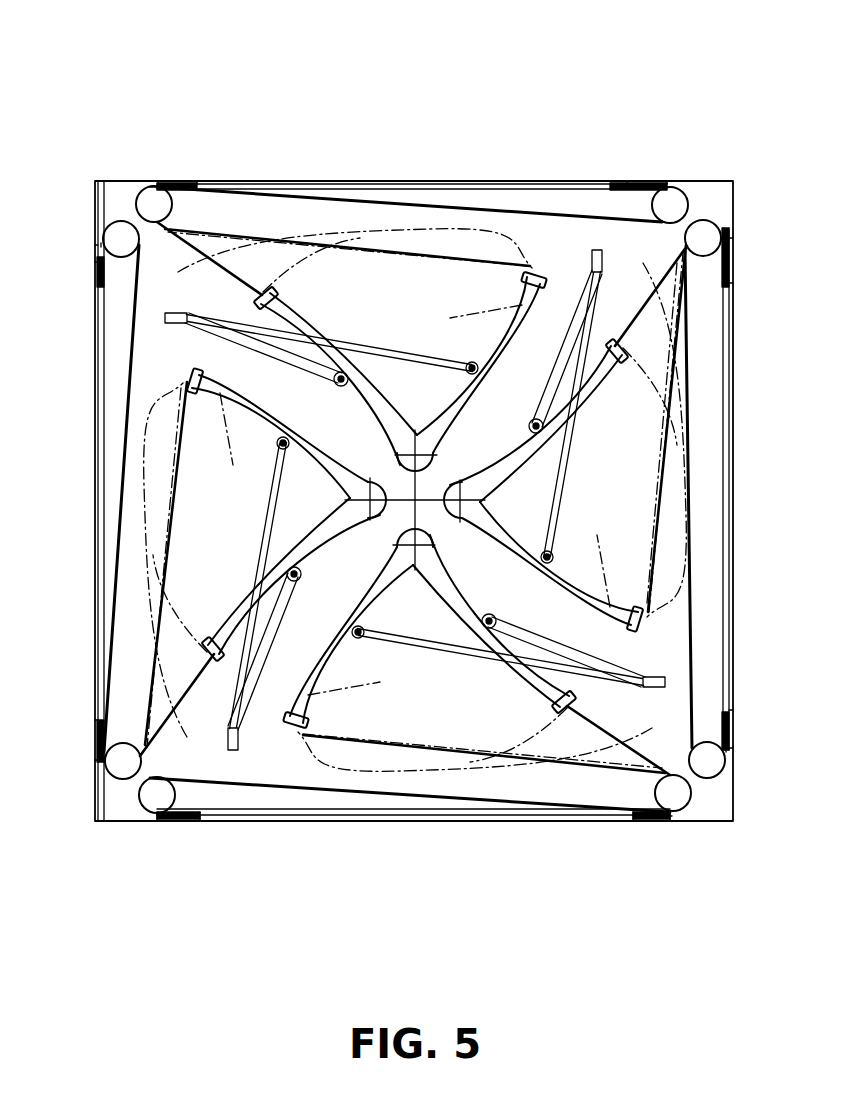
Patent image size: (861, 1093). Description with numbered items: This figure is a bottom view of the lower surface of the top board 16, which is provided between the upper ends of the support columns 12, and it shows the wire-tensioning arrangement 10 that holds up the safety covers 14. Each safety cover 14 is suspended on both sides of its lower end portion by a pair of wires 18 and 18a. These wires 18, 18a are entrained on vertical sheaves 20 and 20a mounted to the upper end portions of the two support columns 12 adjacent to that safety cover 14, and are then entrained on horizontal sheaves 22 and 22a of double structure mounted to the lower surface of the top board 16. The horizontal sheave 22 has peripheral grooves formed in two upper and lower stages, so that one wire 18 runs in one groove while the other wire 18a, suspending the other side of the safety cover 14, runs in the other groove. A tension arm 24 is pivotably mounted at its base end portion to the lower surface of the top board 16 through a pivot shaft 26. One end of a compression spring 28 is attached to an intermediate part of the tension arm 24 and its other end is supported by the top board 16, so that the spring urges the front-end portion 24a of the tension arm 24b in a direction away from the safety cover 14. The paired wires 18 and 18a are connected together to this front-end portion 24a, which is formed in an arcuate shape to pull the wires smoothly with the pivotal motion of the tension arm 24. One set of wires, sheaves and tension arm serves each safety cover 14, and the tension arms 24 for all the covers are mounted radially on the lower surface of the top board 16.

The image forming apparatus frame 10 is at (735, 200).
The support column 12 is at (148, 183).
The safety cover 14 is at (345, 181).
The top board 16 is at (688, 410).
The wire 18 is at (272, 195).
The wire 18a is at (470, 210).
The vertical sheave 20 is at (176, 184).
The vertical sheave 20a is at (96, 262).
The horizontal sheave 22 is at (152, 188).
The horizontal sheave 22a is at (99, 245).
The tension arm 24 is at (470, 360).
The front-end portion 24a is at (280, 296).
The tension arm 24b is at (700, 492).
The pivot shaft 26 is at (341, 386).
The compression spring 28 is at (590, 268).